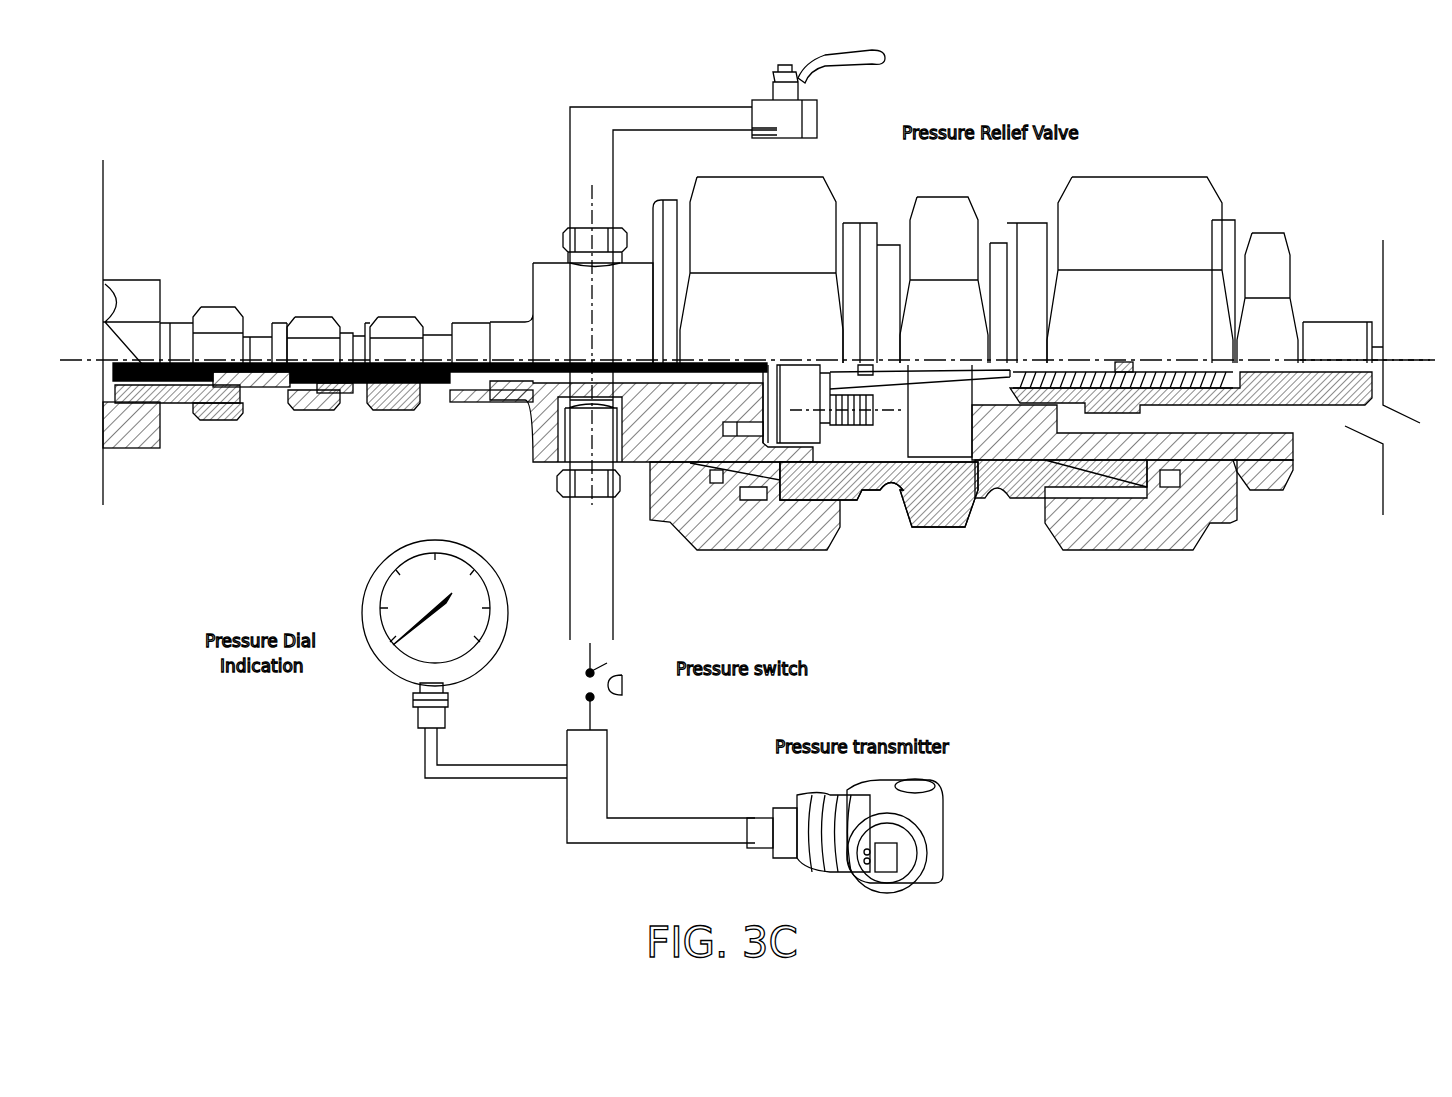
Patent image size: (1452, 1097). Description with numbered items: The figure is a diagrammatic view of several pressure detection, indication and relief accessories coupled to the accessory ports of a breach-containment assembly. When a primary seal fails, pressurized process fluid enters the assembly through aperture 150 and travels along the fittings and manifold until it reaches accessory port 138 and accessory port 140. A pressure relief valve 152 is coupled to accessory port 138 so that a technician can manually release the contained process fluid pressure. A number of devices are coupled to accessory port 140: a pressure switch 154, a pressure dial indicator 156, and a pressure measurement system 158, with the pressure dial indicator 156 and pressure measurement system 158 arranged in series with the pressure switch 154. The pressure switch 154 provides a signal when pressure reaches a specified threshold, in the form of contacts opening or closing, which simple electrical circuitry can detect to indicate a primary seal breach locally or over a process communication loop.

The accessory port 138 is at (565, 228).
The accessory port 140 is at (560, 503).
The aperture 150 is at (1390, 360).
The pressure relief valve 152 is at (820, 105).
The pressure switch 154 is at (592, 662).
The pressure dial indicator 156 is at (395, 668).
The pressure measurement system 158 is at (887, 870).